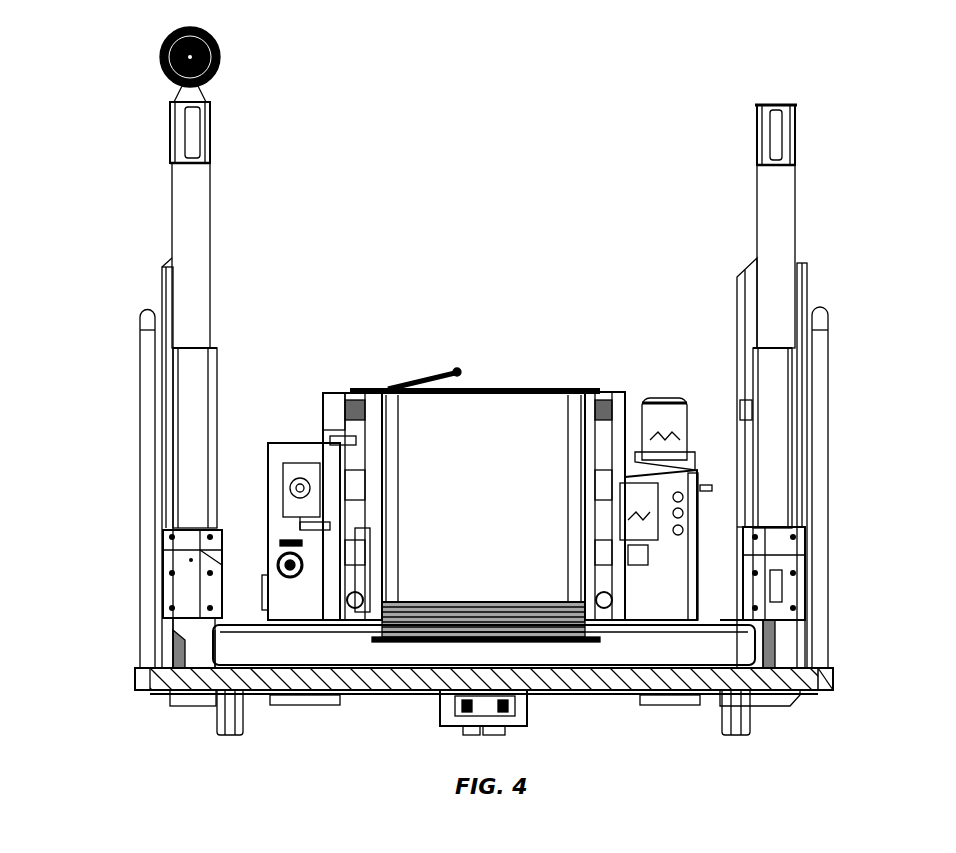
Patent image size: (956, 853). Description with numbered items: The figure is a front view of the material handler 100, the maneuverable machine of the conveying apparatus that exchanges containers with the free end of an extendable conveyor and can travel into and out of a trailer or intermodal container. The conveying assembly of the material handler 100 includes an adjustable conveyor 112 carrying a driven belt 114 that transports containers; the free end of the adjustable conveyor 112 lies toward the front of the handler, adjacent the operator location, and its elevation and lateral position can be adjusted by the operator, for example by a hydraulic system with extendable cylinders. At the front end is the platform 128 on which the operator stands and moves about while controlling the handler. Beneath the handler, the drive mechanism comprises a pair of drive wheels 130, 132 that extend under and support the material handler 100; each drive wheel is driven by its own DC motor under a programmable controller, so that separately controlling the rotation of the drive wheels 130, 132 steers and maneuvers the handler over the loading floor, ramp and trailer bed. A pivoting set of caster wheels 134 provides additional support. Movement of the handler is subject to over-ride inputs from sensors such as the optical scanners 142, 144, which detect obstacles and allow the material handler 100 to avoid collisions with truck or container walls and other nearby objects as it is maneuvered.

The material handler 100 is at (518, 190).
The adjustable conveyor 112 is at (321, 347).
The driven belt 114 is at (475, 516).
The platform 128 is at (212, 665).
The drive wheel 130 is at (218, 717).
The drive wheel 132 is at (750, 717).
The caster wheels 134 is at (497, 735).
The optical scanner 142 is at (125, 667).
The optical scanner 144 is at (848, 666).